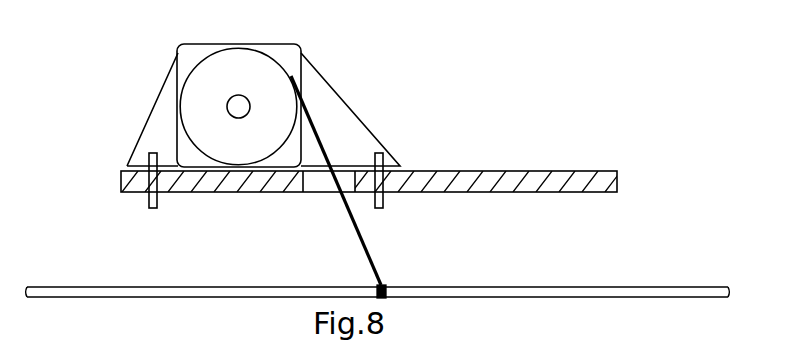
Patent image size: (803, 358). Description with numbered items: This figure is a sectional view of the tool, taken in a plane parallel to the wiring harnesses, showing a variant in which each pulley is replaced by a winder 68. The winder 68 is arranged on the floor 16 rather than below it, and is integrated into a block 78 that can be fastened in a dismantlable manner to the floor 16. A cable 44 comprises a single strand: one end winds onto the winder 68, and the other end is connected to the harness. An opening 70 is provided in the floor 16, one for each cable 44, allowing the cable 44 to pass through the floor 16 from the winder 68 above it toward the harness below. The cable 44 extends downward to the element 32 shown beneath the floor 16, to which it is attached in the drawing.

The floor 16 is at (567, 177).
The strap 32 is at (618, 293).
The cable 44 is at (368, 254).
The winder 68 is at (203, 68).
The opening 70 is at (313, 182).
The block 78 is at (178, 90).